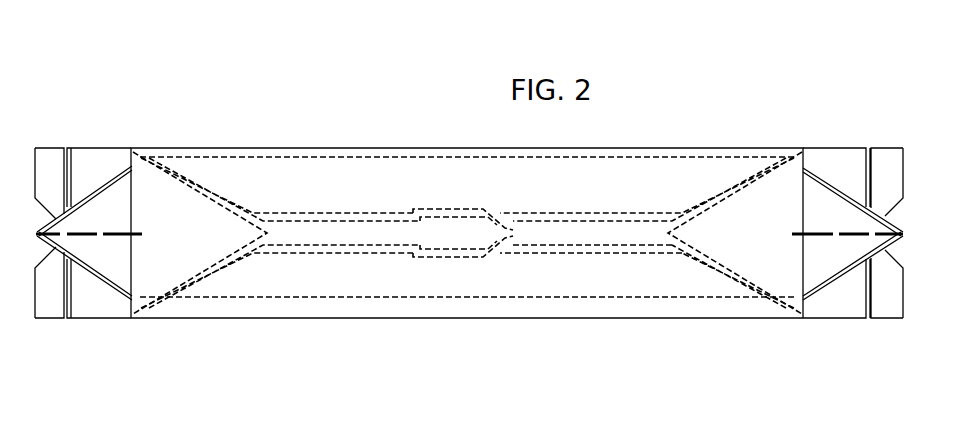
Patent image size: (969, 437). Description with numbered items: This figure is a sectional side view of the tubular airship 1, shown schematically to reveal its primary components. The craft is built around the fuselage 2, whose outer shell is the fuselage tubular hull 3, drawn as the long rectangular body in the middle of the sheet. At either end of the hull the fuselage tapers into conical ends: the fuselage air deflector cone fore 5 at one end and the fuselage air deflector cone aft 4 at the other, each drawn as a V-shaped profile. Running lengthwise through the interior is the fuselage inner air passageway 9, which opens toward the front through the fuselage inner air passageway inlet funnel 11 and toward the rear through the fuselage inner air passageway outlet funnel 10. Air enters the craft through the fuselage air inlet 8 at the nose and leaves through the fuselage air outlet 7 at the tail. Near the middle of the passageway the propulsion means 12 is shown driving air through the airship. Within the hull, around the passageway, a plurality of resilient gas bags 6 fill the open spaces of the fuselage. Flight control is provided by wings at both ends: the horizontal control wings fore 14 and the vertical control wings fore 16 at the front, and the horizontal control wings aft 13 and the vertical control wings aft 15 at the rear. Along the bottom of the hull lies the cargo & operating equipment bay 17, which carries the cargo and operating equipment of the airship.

The tubular airship 1 is at (292, 85).
The fuselage 2 is at (367, 125).
The fuselage tubular hull 3 is at (433, 150).
The fuselage air deflector cone aft 4 is at (705, 162).
The fuselage air deflector cone fore 5 is at (242, 208).
The resilient gas bags 6 is at (192, 230).
The fuselage air outlet 7 is at (812, 146).
The fuselage air inlet 8 is at (128, 147).
The fuselage inner air passageway 9 is at (638, 242).
The fuselage inner air passageway outlet funnel 10 is at (737, 285).
The fuselage inner air passageway inlet funnel 11 is at (202, 283).
The propulsion means 12 is at (452, 233).
The horizontal control wings aft 13 is at (837, 237).
The horizontal control wings fore 14 is at (90, 238).
The vertical control wings aft 15 is at (835, 297).
The vertical control wings fore 16 is at (87, 298).
The cargo & operating equipment bay 17 is at (475, 308).